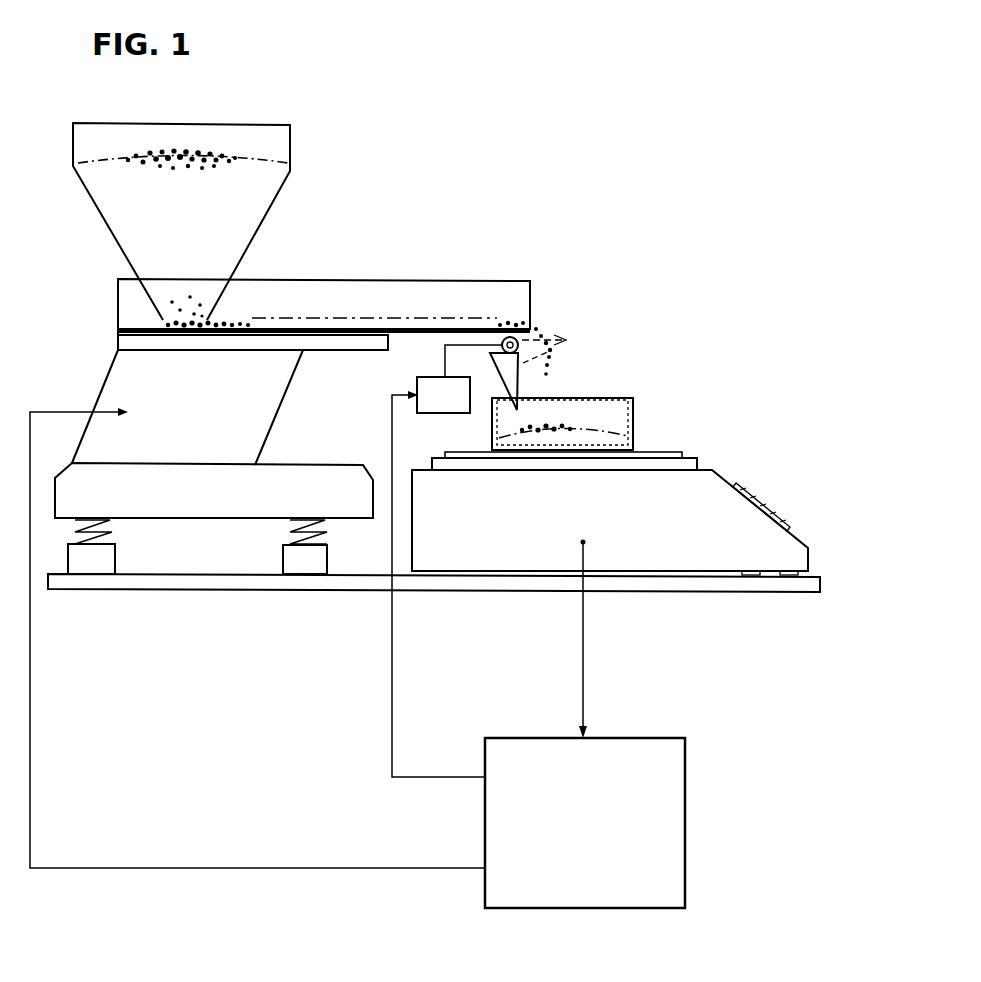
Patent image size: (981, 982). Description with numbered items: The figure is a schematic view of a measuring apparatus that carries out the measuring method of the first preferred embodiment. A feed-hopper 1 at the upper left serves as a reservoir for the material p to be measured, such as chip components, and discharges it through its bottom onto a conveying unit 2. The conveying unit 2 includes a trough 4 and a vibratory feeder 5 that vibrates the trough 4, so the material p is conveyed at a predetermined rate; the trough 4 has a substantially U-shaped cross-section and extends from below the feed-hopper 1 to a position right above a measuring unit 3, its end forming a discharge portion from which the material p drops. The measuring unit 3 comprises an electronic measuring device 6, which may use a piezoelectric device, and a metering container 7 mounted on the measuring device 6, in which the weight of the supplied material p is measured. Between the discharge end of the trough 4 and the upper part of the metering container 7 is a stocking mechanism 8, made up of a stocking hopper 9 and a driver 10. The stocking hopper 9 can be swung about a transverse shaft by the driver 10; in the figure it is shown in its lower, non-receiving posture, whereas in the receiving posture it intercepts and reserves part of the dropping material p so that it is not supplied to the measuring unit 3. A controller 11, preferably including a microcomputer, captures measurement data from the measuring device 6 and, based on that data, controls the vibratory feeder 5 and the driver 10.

The feed-hopper 1 is at (72, 144).
The conveying unit 2 is at (378, 278).
The measuring unit 3 is at (714, 449).
The trough 4 is at (298, 279).
The vibratory feeder 5 is at (118, 352).
The measuring device 6 is at (690, 553).
The metering container 7 is at (633, 413).
The stocking mechanism 8 is at (556, 322).
The stocking hopper 9 is at (496, 366).
The driver 10 is at (413, 359).
The controller 11 is at (653, 910).
The material P is at (207, 157).